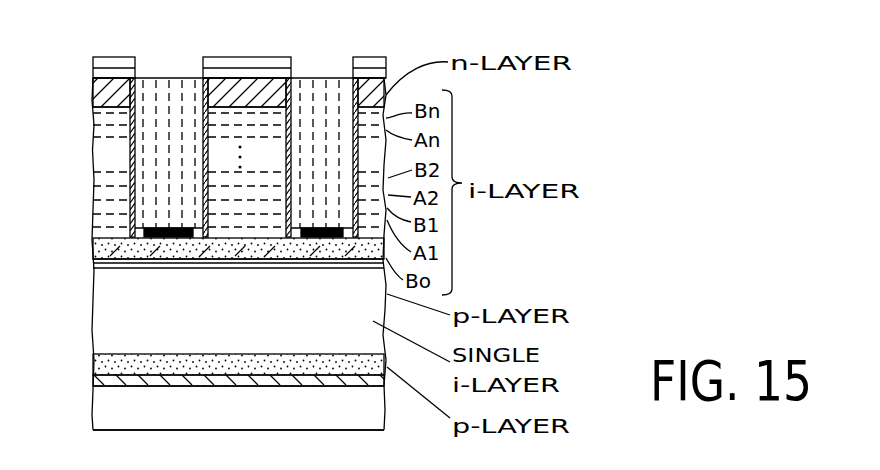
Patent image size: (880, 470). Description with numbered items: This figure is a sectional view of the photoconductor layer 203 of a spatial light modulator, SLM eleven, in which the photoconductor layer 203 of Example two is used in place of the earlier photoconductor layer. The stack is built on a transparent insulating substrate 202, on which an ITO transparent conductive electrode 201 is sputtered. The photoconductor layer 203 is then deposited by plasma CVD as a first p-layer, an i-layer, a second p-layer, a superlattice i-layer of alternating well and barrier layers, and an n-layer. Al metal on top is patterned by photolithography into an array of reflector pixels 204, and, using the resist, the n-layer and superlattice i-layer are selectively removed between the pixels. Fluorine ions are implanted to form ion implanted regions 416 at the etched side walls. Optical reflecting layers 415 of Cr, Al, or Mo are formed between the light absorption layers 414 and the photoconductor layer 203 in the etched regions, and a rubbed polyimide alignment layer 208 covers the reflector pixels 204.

The photoconductor layer 203 is at (582, 37).
The alignment layer 208 is at (123, 57).
The reflector pixels 204 is at (280, 72).
The light absorption layers 414 is at (167, 156).
The ion implanted regions 416 is at (128, 165).
The optical reflecting layers 415 is at (128, 227).
The transparent conductive electrode 201 is at (92, 380).
The transparent insulating substrate 202 is at (101, 406).